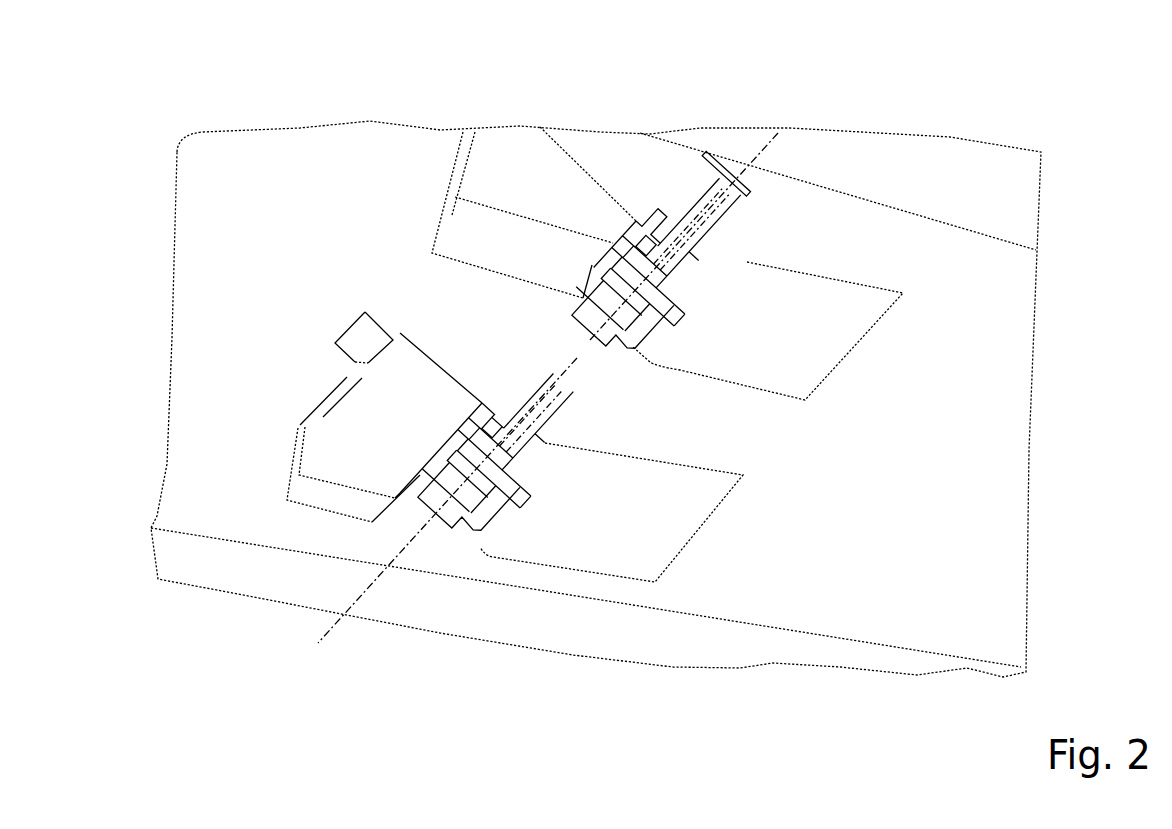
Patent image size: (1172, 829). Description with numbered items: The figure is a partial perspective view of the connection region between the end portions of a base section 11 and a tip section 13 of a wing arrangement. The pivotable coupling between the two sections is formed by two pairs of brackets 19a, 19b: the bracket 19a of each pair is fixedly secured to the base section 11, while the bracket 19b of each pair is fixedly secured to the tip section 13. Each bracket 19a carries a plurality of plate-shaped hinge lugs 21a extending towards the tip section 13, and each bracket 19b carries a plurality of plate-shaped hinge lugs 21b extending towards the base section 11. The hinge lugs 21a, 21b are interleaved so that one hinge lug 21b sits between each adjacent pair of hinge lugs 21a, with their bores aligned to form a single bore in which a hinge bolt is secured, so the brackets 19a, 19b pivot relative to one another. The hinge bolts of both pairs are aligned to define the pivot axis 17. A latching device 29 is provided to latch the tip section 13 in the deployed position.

The base section 11 is at (318, 155).
The tip section 13 is at (1005, 288).
The pivot axis 17 is at (790, 130).
The bracket 19a is at (522, 153).
The bracket 19b is at (817, 344).
The hinge lug 21a is at (645, 215).
The hinge lug 21b is at (693, 296).
The latching device 29 is at (713, 165).